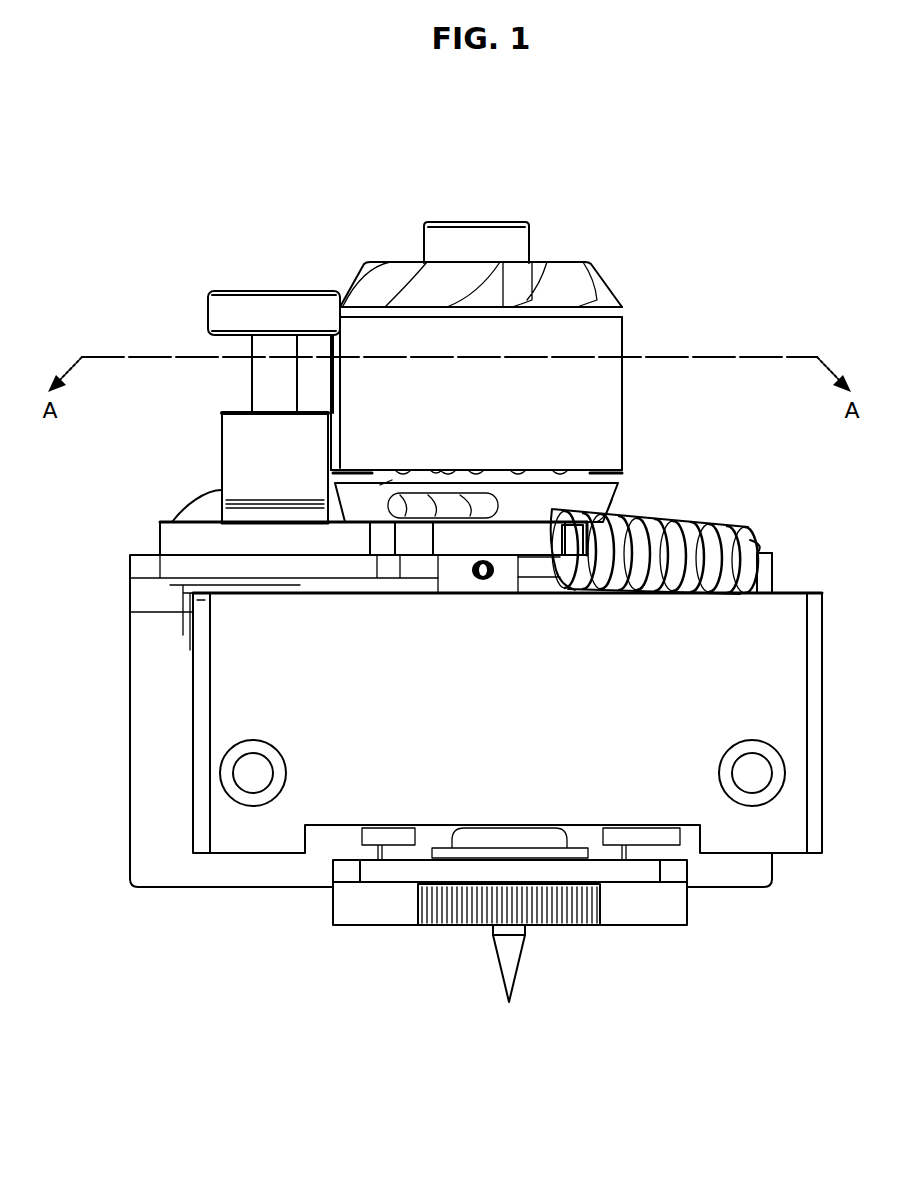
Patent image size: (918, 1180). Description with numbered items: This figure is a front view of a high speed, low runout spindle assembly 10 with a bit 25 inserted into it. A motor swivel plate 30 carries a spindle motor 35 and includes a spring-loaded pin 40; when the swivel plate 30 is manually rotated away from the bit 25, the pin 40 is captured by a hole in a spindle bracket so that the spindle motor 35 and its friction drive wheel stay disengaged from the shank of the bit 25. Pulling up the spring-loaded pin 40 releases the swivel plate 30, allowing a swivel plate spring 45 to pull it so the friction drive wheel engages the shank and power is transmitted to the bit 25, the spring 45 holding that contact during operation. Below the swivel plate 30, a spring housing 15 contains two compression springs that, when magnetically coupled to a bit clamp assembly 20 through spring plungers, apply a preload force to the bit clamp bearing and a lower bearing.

The spindle assembly 10 is at (436, 176).
The spring housing 15 is at (800, 643).
The bit clamp assembly 20 is at (343, 905).
The bit 25 is at (510, 958).
The motor swivel plate 30 is at (172, 532).
The spindle motor 35 is at (607, 350).
The spring-loaded pin 40 is at (220, 310).
The swivel plate spring 45 is at (712, 520).